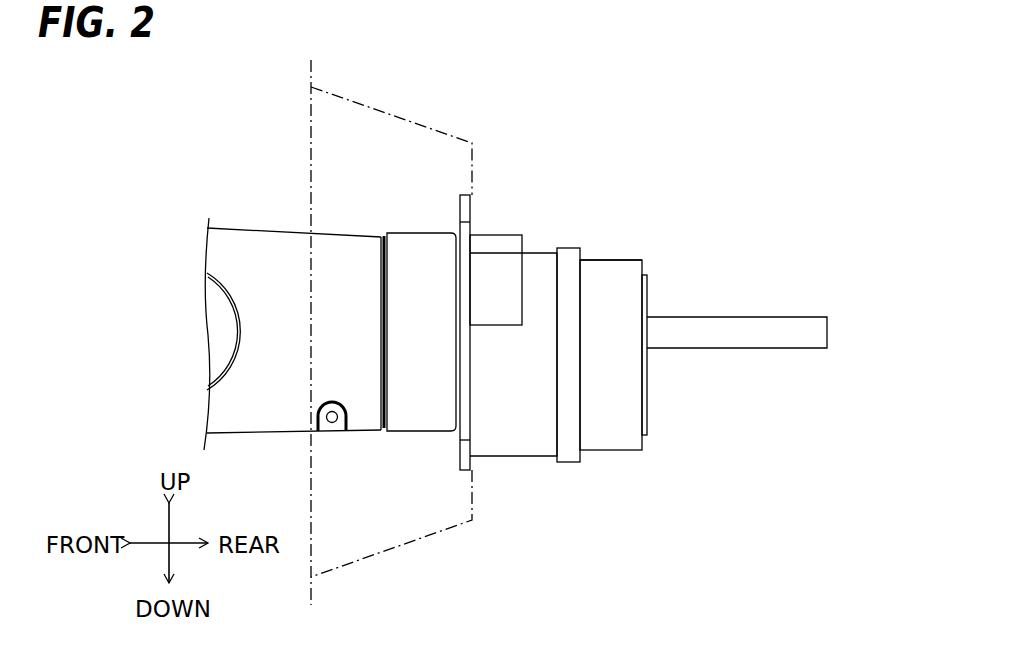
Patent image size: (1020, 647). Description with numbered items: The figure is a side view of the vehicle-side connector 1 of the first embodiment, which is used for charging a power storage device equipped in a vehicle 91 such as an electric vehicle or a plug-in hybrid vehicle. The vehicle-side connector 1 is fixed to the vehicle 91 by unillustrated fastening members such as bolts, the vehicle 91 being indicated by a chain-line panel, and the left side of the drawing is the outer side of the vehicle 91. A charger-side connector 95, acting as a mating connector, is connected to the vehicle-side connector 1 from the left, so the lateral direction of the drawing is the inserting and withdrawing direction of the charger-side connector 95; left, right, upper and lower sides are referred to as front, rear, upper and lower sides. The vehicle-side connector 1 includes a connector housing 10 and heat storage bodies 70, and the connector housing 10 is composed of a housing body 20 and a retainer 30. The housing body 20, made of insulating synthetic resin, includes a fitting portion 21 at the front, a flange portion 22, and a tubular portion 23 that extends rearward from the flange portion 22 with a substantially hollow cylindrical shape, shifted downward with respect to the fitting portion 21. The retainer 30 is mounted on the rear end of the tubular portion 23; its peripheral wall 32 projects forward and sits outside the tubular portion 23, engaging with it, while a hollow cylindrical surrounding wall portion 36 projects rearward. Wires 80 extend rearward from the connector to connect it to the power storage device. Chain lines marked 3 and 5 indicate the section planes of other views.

The vehicle-side connector 1 is at (780, 122).
The section line III 3 is at (185, 332).
The section line V 5 is at (635, 240).
The connector housing 10 is at (716, 151).
The housing body 20 is at (510, 183).
The fitting portion 21 is at (408, 233).
The flange portion 22 is at (460, 198).
The tubular portion 23 is at (538, 250).
The retainer 30 is at (648, 192).
The peripheral wall 32 is at (570, 250).
The surrounding wall portion 36 is at (636, 258).
The heat storage bodies 70 is at (648, 281).
The wires 80 is at (783, 317).
The vehicle 91 is at (311, 87).
The charger-side connector 95 is at (247, 228).